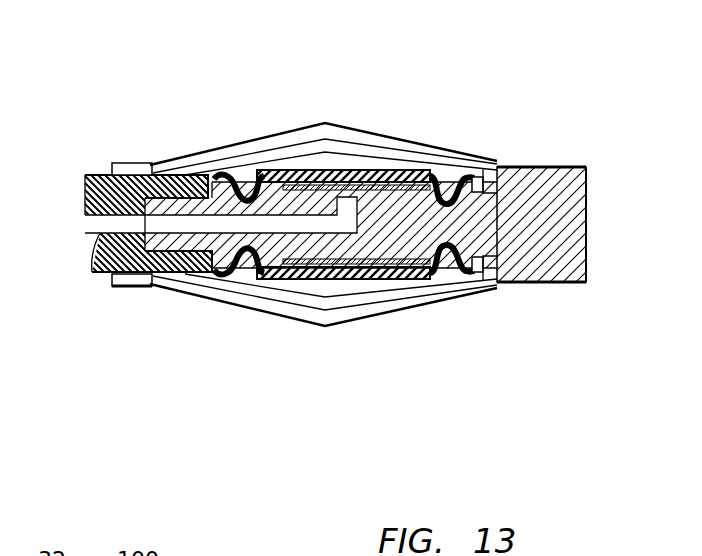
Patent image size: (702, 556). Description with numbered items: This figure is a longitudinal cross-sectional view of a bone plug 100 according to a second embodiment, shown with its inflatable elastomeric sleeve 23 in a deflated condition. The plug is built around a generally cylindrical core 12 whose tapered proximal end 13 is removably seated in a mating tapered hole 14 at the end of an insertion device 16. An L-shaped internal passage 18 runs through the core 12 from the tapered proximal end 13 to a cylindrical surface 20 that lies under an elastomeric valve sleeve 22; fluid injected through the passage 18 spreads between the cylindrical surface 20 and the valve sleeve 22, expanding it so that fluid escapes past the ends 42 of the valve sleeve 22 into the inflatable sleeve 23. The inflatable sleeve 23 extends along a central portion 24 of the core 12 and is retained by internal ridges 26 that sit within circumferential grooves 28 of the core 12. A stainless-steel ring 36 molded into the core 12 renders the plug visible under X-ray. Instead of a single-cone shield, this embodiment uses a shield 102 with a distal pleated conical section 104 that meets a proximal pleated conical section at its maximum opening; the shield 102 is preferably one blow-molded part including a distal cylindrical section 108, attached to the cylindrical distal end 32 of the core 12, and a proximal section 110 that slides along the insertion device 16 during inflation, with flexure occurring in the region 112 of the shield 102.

The core 12 is at (598, 214).
The tapered proximal end 13 is at (170, 288).
The tapered hole 14 is at (160, 173).
The insertion device 16 is at (178, 266).
The internal passage 18 is at (323, 235).
The cylindrical surface 20 is at (373, 170).
The elastomeric valve sleeve 22 is at (301, 279).
The inflatable elastomeric sleeve 23 is at (370, 279).
The central portion 24 is at (265, 170).
The internal ridges 26 is at (237, 276).
The grooves 28 is at (455, 245).
The cylindrical distal end 32 is at (588, 256).
The stainless-steel ring 36 is at (512, 163).
The ends of the valve sleeve 42 is at (295, 170).
The bone plug 100 is at (403, 412).
The shield 102 is at (333, 115).
The distal pleated conical section 104 is at (438, 150).
The distal cylindrical section 108 is at (553, 166).
The proximal cylindrical section 110 is at (112, 165).
The region of flexure 112 is at (320, 121).